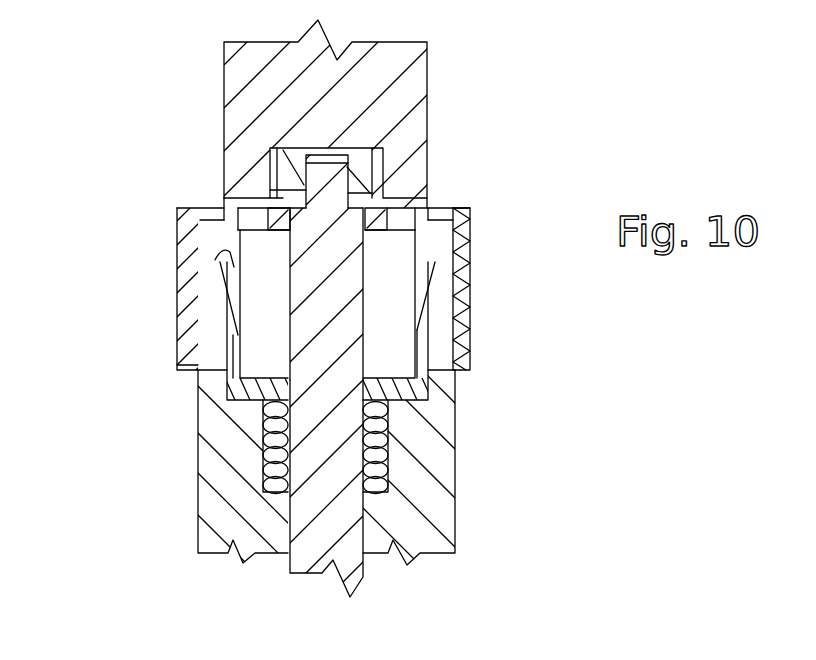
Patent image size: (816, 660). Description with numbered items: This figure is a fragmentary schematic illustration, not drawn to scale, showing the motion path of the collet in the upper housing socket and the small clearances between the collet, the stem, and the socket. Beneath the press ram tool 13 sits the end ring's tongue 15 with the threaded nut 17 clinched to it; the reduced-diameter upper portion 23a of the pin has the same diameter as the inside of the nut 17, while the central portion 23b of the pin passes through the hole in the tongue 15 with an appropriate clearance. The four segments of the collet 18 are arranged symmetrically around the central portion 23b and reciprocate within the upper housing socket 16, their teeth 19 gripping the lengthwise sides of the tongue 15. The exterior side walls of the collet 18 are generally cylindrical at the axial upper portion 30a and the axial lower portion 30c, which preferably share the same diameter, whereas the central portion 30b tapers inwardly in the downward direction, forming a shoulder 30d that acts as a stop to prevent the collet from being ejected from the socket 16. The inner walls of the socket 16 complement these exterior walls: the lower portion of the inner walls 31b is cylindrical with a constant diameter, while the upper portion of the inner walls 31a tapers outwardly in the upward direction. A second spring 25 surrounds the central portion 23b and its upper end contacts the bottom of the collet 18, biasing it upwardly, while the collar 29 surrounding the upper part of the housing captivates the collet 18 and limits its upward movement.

The press ram tool 13 is at (427, 80).
The tongue 15 is at (428, 208).
The upper housing socket 16 is at (430, 240).
The threaded nut 17 is at (305, 170).
The collet 18 is at (395, 293).
The teeth 19 is at (257, 218).
The reduced-diameter upper portion 23a is at (327, 180).
The central portion 23b is at (347, 553).
The second spring 25 is at (395, 455).
The collar 29 is at (458, 208).
The axial upper portion 30a is at (215, 238).
The central portion 30b is at (230, 322).
The axial lower portion 30c is at (215, 388).
The shoulder 30d is at (217, 260).
The upper portion of the inner walls 31a is at (432, 247).
The lower portion of the inner walls 31b is at (427, 335).